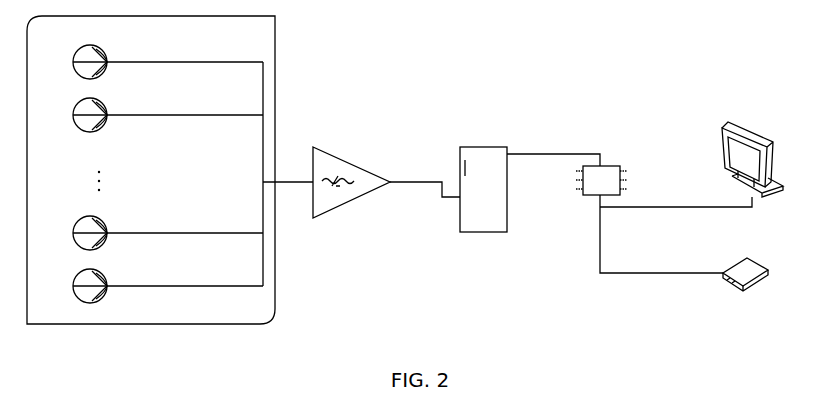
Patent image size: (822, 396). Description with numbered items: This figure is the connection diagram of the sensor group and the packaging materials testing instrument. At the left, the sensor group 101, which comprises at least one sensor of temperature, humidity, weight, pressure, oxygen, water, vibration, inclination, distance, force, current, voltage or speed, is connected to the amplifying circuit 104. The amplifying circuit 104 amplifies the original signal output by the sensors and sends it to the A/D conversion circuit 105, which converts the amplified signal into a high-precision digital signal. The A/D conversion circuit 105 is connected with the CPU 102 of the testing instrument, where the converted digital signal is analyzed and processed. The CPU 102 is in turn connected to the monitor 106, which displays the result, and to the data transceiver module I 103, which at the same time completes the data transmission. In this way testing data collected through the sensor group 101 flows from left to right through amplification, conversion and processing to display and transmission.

The sensor group 101 is at (151, 170).
The amplifying circuit 104 is at (351, 191).
The A/D conversion circuit 105 is at (483, 180).
The CPU 102 is at (610, 166).
The monitor 106 is at (768, 140).
The data transceiver module I 103 is at (753, 283).